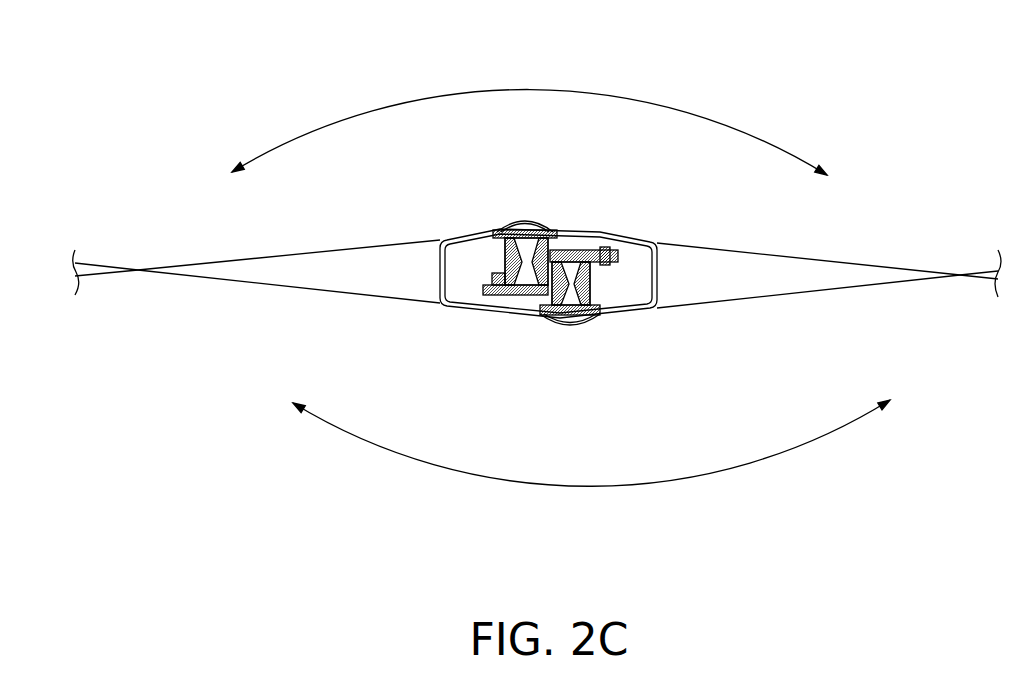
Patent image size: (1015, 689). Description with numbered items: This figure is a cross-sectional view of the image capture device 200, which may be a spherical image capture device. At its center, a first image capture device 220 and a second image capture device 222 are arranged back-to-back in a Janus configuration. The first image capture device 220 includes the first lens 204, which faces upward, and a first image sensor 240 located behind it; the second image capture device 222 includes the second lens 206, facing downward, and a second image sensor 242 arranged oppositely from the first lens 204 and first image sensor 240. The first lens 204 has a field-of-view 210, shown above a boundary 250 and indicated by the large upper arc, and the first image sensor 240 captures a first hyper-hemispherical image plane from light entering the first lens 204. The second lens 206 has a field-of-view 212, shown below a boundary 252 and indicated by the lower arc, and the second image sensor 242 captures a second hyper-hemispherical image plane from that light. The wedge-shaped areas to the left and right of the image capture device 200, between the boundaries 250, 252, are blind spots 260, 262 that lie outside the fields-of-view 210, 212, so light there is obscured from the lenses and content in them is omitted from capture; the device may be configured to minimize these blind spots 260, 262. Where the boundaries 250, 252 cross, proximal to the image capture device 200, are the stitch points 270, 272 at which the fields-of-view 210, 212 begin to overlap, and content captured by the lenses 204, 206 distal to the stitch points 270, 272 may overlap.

The image capture device 200 is at (437, 282).
The first lens 204 is at (535, 216).
The second lens 206 is at (573, 330).
The field-of-view 210 is at (582, 92).
The field-of-view 212 is at (591, 487).
The first image capture device 220 is at (510, 232).
The second image capture device 222 is at (597, 323).
The first image sensor 240 is at (530, 297).
The second image sensor 242 is at (583, 250).
The boundary 250 is at (292, 254).
The boundary 252 is at (323, 294).
The blind spot 260 is at (373, 272).
The blind spot 262 is at (710, 272).
The stitch point 270 is at (138, 272).
The stitch point 272 is at (960, 277).